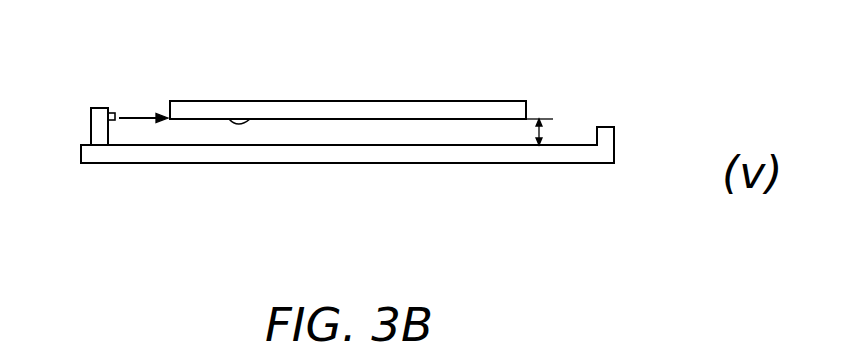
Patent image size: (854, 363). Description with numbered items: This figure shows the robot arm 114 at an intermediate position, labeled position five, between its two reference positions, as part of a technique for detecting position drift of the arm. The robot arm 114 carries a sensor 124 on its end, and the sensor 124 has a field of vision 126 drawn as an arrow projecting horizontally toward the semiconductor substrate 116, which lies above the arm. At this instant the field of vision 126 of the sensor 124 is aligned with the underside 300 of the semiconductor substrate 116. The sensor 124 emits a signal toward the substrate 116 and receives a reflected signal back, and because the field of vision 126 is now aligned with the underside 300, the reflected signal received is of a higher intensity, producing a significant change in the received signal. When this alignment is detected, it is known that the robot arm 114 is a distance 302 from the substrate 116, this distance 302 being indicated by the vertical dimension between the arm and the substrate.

The robot arm 114 is at (347, 155).
The semiconductor substrate 116 is at (347, 102).
The sensor 124 is at (98, 108).
The field of vision 126 is at (140, 116).
The underside 300 is at (247, 121).
The distance 302 is at (543, 130).